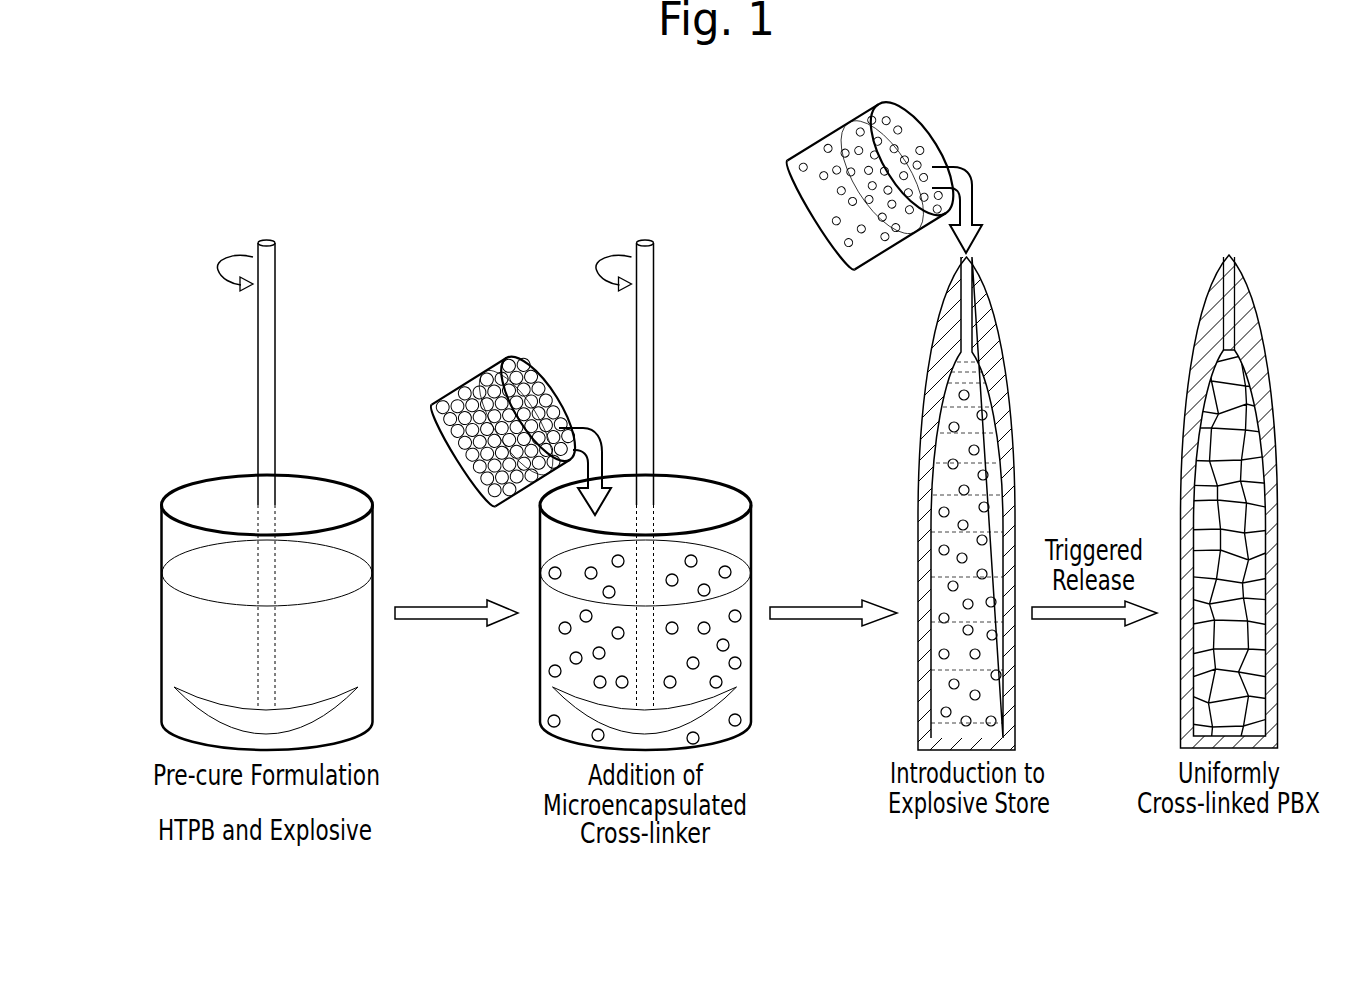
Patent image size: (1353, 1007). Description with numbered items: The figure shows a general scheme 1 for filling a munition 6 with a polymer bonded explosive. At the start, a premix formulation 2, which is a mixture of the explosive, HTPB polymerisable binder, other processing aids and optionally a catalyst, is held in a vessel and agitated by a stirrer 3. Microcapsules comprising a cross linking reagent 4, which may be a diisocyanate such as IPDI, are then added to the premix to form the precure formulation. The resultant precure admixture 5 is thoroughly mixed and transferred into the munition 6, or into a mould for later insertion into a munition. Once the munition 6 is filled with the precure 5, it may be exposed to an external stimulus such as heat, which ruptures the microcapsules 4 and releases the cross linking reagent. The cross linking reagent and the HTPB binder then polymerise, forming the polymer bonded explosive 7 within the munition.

The general scheme 1 is at (214, 227).
The premix formulation 2 is at (193, 652).
The stirrer 3 is at (266, 405).
The microcapsules comprising a cross linking reagent 4 is at (468, 397).
The precure admixture 5 is at (711, 528).
The munition 6 is at (982, 316).
The polymer bonded explosive 7 is at (1240, 478).